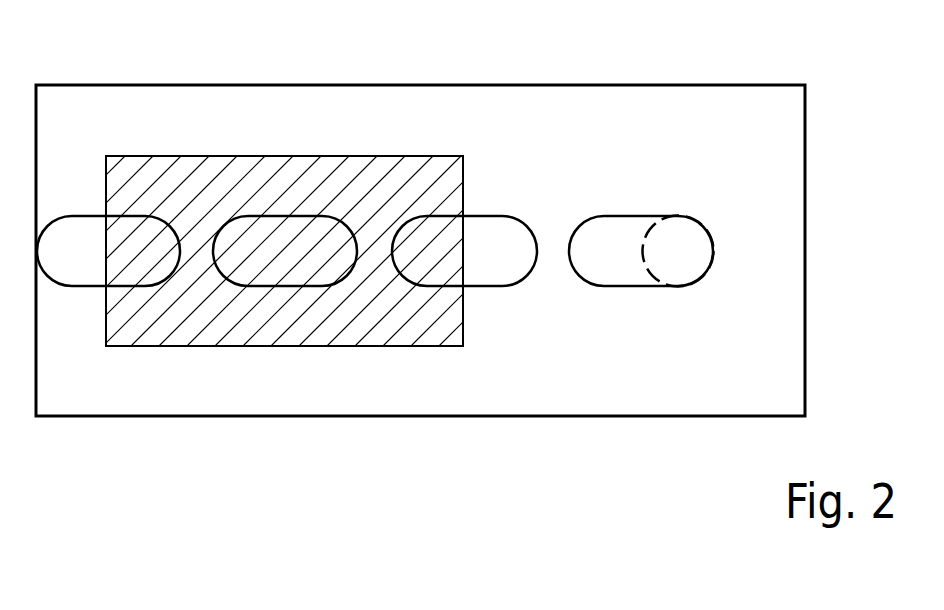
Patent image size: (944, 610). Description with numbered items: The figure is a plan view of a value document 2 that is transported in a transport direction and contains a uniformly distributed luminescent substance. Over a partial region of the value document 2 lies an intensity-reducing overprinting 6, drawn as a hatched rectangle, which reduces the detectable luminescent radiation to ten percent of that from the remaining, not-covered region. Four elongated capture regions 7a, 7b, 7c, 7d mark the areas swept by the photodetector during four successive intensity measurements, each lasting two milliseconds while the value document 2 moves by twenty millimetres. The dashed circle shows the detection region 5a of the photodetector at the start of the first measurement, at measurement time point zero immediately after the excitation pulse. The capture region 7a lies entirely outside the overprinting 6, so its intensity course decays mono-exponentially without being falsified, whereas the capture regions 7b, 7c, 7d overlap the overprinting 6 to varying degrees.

The value document 2 is at (805, 297).
The intensity-reducing overprinting 6 is at (279, 346).
The capture region 7a is at (640, 216).
The capture region 7b is at (512, 216).
The capture region 7c is at (285, 216).
The capture region 7d is at (90, 216).
The detection region 5a is at (648, 287).